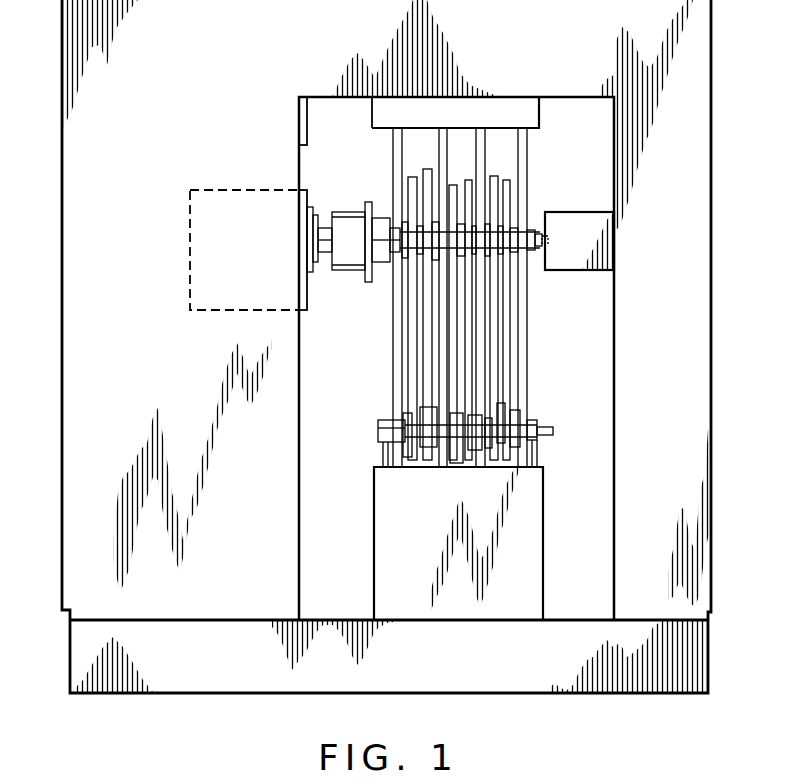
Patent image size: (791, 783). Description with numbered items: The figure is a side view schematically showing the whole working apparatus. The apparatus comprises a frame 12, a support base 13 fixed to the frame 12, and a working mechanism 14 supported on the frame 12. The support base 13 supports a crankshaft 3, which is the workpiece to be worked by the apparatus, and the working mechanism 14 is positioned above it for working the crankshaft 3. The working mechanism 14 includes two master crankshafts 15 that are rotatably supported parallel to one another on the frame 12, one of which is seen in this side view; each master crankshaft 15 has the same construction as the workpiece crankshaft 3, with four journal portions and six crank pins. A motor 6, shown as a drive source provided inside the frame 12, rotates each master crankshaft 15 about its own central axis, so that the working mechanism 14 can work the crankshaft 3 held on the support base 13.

The frame 12 is at (72, 418).
The working mechanism 14 is at (547, 172).
The master crankshaft 15 is at (388, 228).
The motor 6 is at (200, 277).
The crankshaft 3 is at (548, 440).
The support base 13 is at (540, 552).